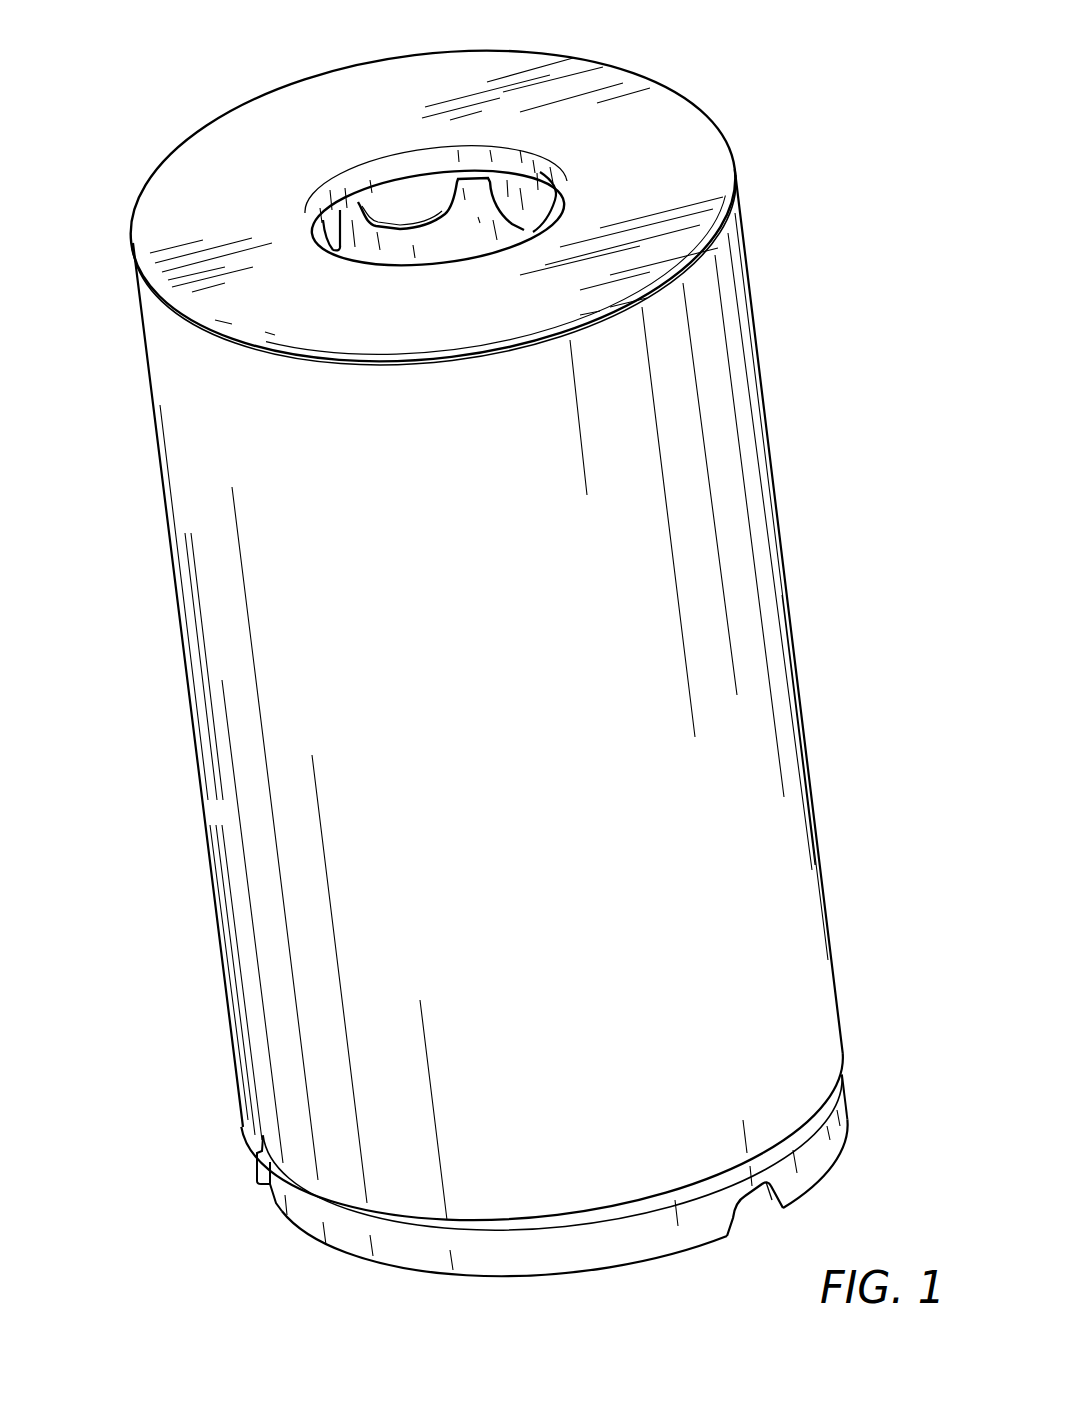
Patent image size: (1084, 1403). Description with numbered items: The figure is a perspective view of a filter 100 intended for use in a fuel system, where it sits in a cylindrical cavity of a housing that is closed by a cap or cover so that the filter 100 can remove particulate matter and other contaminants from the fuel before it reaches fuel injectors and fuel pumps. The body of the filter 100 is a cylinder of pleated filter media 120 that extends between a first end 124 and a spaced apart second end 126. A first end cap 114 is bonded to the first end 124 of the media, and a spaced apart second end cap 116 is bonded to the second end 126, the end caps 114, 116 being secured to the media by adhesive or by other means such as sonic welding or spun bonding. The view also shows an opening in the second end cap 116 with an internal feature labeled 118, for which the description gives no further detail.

The filter 100 is at (814, 208).
The first end cap 114 is at (815, 1145).
The second end cap 116 is at (670, 120).
The locking tab 118 is at (420, 200).
The pleated filter media 120 is at (477, 215).
The first end 124 is at (826, 1050).
The second end 126 is at (162, 308).